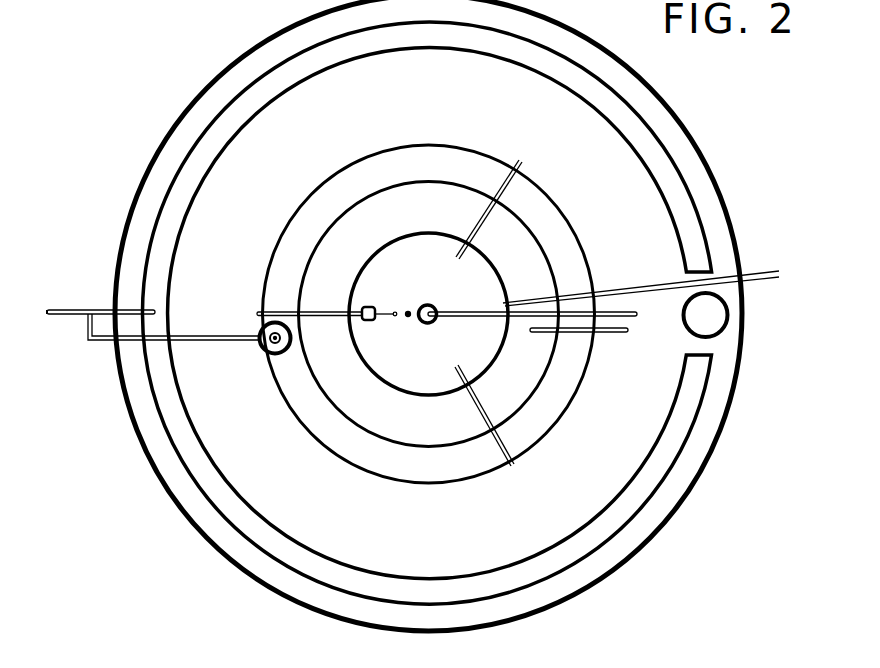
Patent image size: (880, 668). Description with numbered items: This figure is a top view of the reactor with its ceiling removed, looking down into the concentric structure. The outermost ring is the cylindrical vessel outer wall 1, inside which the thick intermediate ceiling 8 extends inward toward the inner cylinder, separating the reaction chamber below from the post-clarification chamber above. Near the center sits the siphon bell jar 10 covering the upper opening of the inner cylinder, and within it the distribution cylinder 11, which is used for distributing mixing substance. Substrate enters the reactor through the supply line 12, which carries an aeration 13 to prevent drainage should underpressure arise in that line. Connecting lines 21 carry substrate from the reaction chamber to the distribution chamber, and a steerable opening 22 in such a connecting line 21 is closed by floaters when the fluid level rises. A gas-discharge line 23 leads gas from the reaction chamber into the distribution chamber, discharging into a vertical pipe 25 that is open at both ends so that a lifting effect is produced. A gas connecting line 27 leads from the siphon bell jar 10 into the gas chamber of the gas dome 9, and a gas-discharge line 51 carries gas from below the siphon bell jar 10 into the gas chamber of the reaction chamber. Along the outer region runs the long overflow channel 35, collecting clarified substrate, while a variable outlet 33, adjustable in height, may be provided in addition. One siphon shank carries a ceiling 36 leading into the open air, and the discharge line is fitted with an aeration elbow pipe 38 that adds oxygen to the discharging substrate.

The cylindrical vessel outer wall 1 is at (676, 511).
The thick intermediate ceiling 8 is at (429, 341).
The gas dome 9 is at (706, 315).
The siphon bell jar 10 is at (429, 314).
The distribution cylinder 11 is at (377, 253).
The supply line 12 is at (652, 276).
The aeration 13 is at (649, 291).
The connecting lines 21 is at (473, 235).
The steerable opening 22 is at (330, 302).
The gas-discharge line 23 is at (532, 329).
The vertical pipe 25 is at (432, 306).
The gas connecting line 27 is at (409, 319).
The variable outlet 33 is at (260, 348).
The overflow channel 35 is at (426, 313).
The ceiling 36 is at (92, 309).
The aeration elbow pipe 38 is at (59, 330).
The gas-discharge line 51 is at (584, 344).